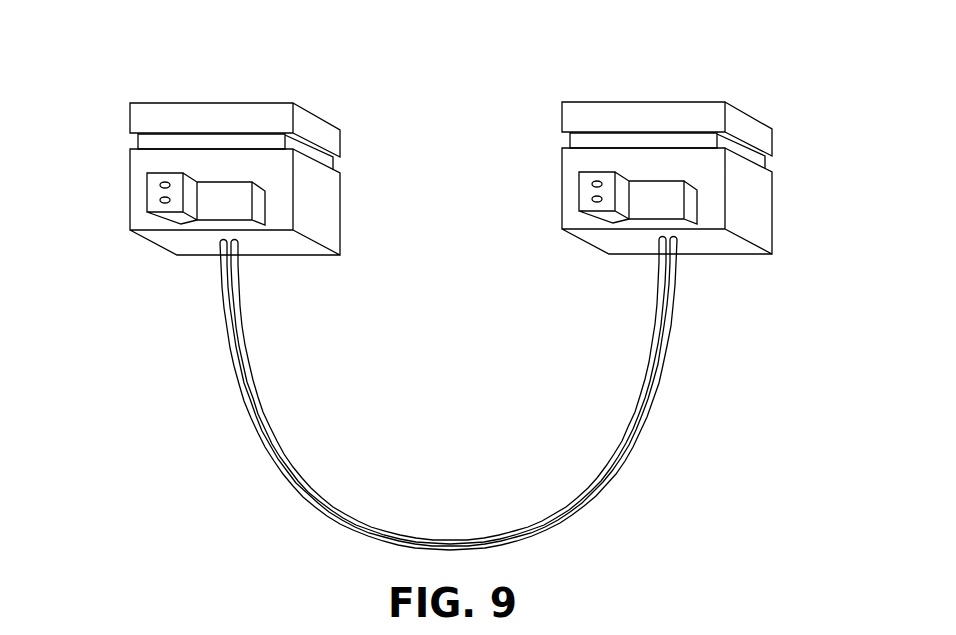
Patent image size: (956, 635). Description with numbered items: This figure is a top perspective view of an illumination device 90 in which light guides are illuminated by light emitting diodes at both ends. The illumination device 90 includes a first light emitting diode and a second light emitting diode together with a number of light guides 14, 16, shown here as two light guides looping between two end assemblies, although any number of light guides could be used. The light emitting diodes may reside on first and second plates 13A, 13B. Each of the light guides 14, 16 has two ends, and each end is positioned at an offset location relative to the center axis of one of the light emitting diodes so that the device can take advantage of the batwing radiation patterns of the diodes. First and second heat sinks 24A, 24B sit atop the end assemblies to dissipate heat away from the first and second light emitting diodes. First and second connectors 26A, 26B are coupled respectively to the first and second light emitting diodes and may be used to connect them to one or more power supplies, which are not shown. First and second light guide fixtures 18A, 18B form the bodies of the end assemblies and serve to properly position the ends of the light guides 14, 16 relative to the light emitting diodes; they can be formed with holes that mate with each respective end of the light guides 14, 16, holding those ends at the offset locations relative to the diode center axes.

The illumination device 90 is at (230, 64).
The second heat sink 24B is at (140, 115).
The first heat sink 24A is at (572, 112).
The first plate 13A is at (138, 138).
The second plate 13B is at (570, 137).
The second light guide fixture 18B is at (320, 208).
The first light guide fixture 18A is at (752, 205).
The second connector 26B is at (180, 222).
The first connector 26A is at (611, 220).
The light guide 14 is at (657, 320).
The light guide 16 is at (675, 338).